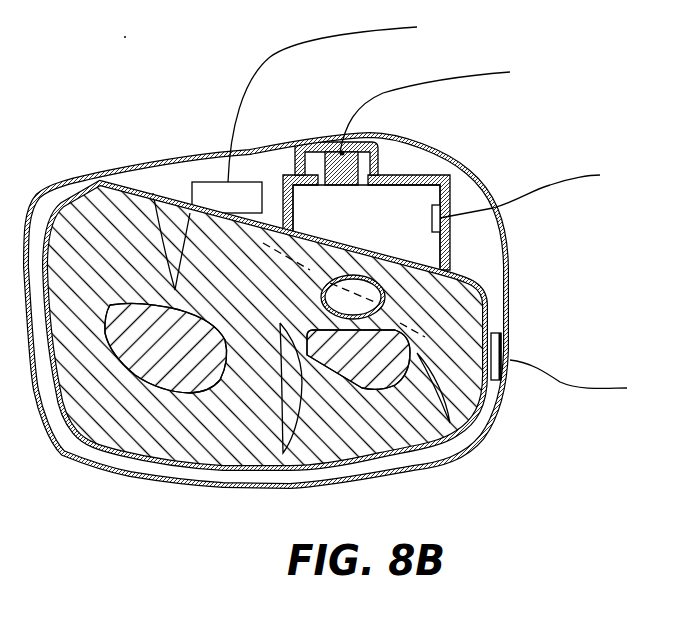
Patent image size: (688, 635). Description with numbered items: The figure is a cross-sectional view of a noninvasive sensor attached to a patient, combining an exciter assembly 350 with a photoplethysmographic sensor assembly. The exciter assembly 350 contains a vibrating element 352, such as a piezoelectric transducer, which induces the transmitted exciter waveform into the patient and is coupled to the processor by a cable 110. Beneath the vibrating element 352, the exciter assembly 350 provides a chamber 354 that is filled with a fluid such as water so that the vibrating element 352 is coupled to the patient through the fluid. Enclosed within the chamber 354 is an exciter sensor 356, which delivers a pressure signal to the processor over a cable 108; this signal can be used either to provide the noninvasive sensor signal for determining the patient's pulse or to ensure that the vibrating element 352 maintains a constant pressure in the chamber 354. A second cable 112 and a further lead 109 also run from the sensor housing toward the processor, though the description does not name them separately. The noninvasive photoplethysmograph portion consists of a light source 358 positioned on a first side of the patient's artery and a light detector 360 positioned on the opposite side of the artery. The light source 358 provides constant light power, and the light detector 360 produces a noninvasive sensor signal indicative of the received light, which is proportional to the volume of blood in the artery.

The cable 108 is at (557, 188).
The second lead wire 109 is at (590, 392).
The cable 110 is at (432, 90).
The lead wire 112 is at (300, 43).
The exciter assembly 350 is at (416, 170).
The vibrating element 352 is at (328, 150).
The chamber 354 is at (348, 223).
The exciter sensor 356 is at (432, 223).
The light source 358 is at (213, 182).
The light detector 360 is at (510, 347).